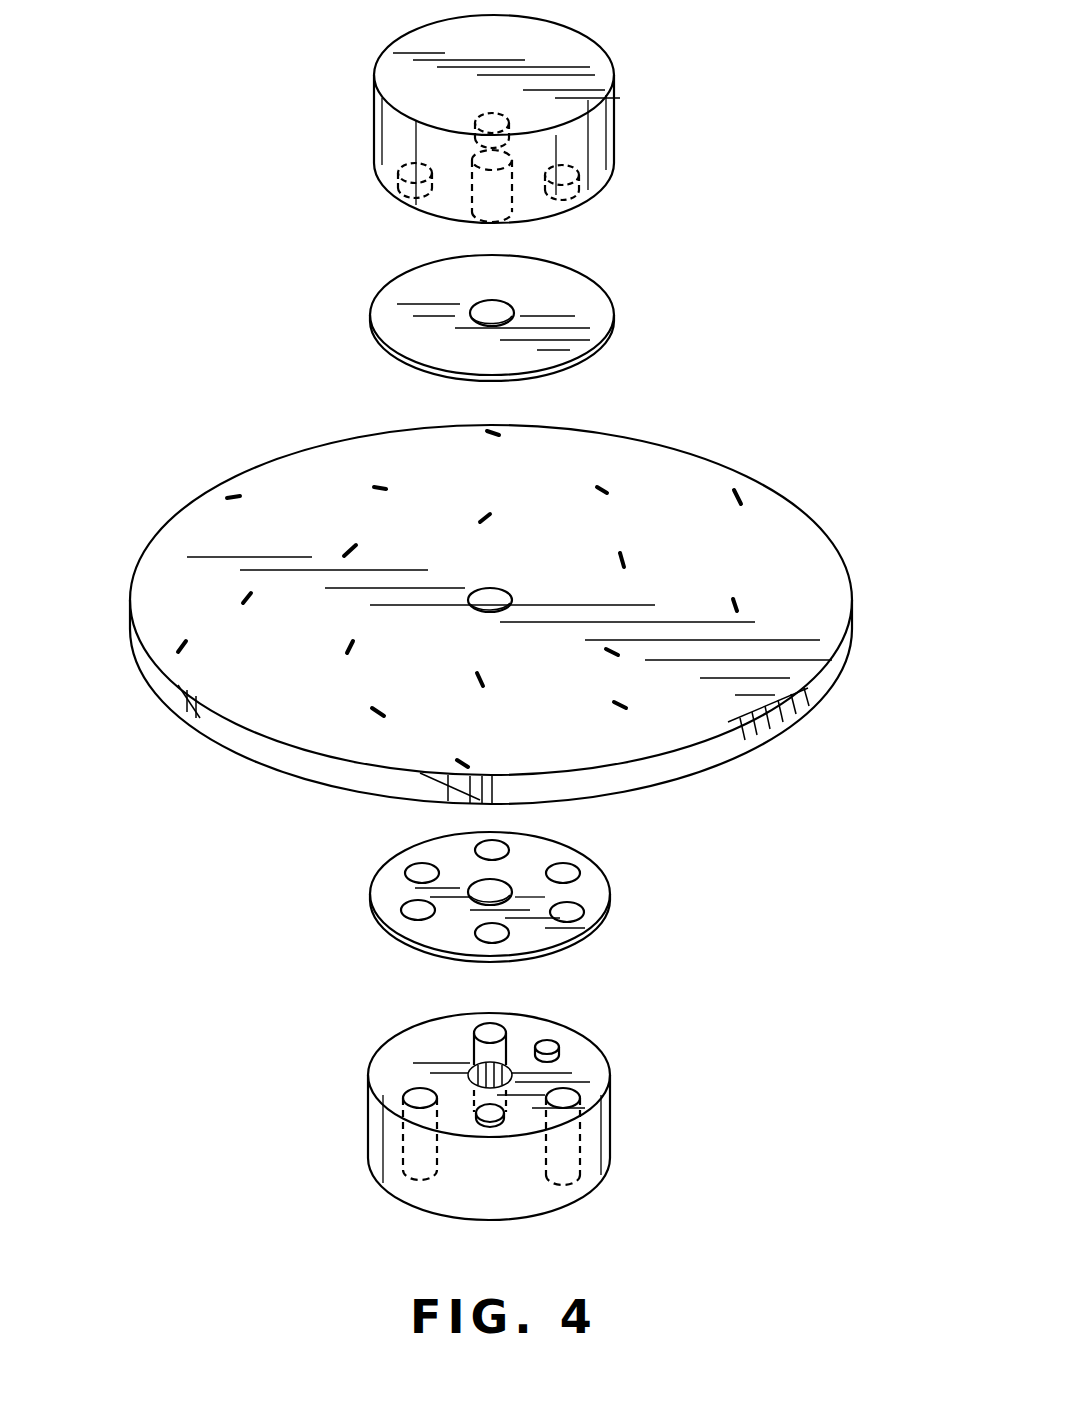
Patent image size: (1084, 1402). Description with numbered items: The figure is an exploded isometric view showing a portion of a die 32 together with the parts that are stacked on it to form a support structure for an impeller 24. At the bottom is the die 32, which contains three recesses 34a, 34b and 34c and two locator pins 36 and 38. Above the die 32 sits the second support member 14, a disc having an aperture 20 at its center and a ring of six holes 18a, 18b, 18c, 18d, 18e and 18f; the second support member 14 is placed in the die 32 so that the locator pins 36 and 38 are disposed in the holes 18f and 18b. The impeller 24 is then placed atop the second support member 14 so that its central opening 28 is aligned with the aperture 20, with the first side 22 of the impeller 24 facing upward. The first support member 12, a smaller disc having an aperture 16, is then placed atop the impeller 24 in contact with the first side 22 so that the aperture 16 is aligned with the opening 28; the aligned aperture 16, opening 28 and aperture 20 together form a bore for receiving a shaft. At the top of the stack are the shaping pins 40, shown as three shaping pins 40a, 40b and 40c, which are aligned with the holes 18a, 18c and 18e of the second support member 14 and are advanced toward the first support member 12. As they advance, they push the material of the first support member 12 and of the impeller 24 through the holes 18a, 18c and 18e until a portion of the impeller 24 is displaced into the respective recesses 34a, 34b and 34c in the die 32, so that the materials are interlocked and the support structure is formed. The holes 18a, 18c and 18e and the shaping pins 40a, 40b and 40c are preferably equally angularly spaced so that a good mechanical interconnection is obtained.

The first support member 12 is at (531, 318).
The second support member 14 is at (495, 903).
The aperture 16 is at (500, 318).
The hole 18a is at (570, 912).
The hole 18b is at (492, 935).
The hole 18c is at (420, 910).
The hole 18d is at (420, 873).
The hole 18e is at (495, 850).
The hole 18f is at (565, 873).
The aperture 20 is at (492, 890).
The first side 22 is at (531, 614).
The impeller 24 is at (830, 675).
The opening 28 is at (497, 598).
The die 32 is at (489, 1128).
The recess 34a is at (418, 1100).
The recess 34b is at (494, 1033).
The recess 34c is at (568, 1100).
The locator pin 36 is at (552, 1045).
The locator pin 38 is at (490, 1115).
The shaping pins 40 is at (512, 119).
The shaping pin 40a is at (566, 180).
The shaping pin 40b is at (412, 173).
The shaping pin 40c is at (500, 120).